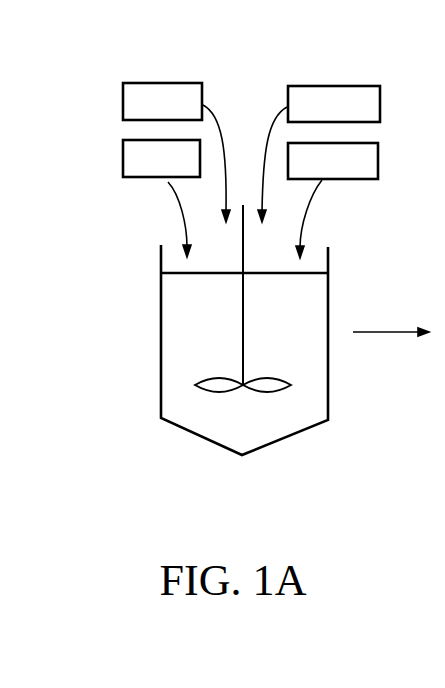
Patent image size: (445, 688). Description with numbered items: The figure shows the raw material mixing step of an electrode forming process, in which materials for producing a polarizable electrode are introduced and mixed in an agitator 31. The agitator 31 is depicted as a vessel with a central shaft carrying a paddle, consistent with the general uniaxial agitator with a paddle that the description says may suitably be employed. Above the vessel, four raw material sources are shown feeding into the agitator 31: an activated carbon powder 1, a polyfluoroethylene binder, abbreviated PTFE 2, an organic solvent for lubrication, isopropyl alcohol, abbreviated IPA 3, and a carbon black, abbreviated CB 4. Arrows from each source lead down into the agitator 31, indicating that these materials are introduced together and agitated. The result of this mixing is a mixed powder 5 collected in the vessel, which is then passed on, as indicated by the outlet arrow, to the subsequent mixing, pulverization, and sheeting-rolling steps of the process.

The activated carbon powder 1 is at (367, 86).
The polyfluoroethylene (PTFE) 2 is at (133, 179).
The isopropyl alcohol (IPA) 3 is at (380, 158).
The carbon black (CB) 4 is at (160, 83).
The mixed powder 5 is at (290, 425).
The agitator 31 is at (338, 281).